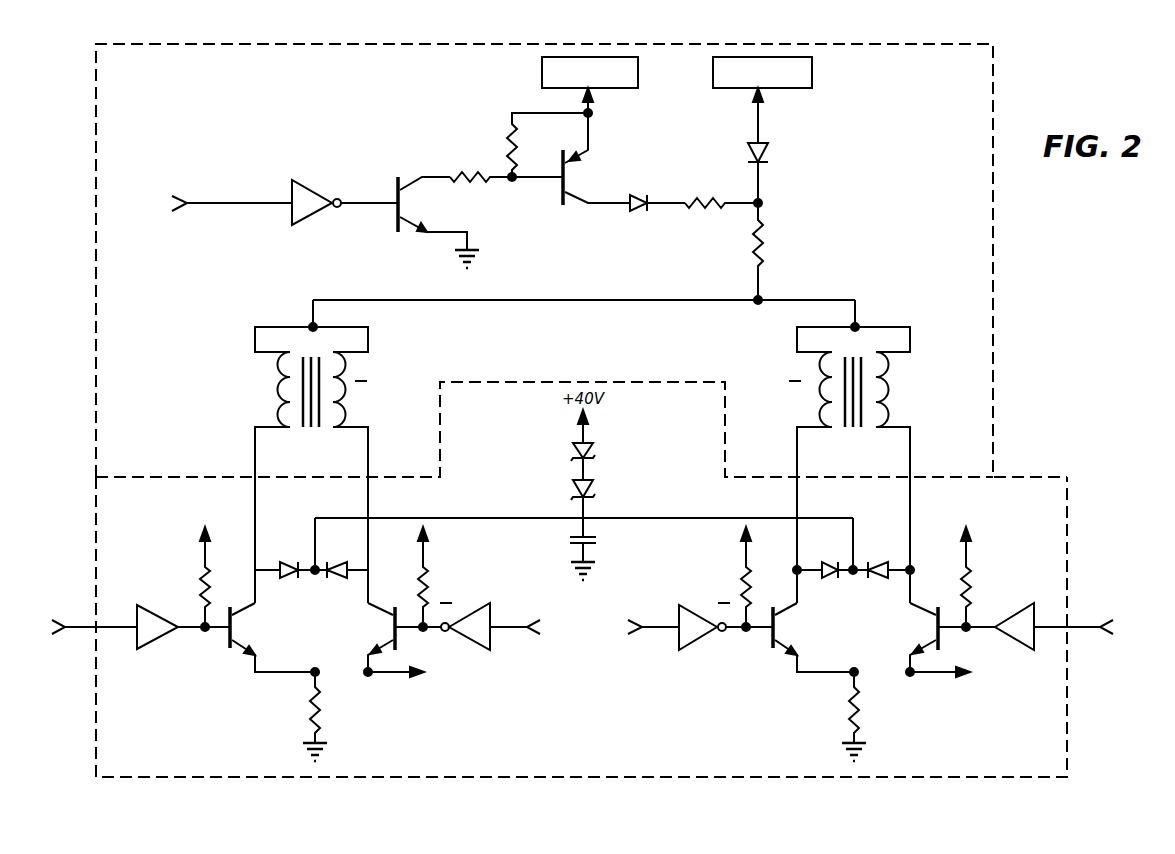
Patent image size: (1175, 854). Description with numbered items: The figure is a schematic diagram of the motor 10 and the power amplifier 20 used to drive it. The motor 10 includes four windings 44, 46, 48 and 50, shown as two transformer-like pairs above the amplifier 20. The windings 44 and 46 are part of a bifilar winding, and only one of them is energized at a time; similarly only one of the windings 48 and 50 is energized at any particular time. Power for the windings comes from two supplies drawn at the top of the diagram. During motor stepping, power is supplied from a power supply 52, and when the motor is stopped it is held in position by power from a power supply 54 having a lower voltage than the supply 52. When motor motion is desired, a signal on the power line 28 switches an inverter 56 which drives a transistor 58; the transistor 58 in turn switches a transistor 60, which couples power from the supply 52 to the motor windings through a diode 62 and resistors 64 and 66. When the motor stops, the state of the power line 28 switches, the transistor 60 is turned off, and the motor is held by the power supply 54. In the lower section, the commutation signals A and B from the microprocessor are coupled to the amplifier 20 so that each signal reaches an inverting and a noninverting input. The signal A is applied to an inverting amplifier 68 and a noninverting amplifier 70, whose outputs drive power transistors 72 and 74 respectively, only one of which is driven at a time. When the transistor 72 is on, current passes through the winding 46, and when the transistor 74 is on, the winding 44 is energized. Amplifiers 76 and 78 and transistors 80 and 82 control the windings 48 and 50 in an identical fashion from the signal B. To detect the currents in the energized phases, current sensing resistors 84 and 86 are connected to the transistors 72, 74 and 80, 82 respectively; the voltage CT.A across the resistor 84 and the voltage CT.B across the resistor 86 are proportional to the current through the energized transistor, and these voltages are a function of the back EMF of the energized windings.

The motor 10 is at (95, 397).
The amplifier 20 is at (96, 531).
The power line 28 is at (238, 205).
The winding 44 is at (280, 408).
The winding 46 is at (348, 410).
The winding 48 is at (822, 408).
The winding 50 is at (891, 410).
The power supply 52 is at (542, 70).
The power supply 54 is at (812, 68).
The inverter 56 is at (308, 225).
The transistor 58 is at (394, 216).
The transistor 60 is at (560, 188).
The diode 62 is at (640, 210).
The resistor 64 is at (720, 200).
The resistor 66 is at (770, 250).
The inverting amplifier 68 is at (476, 650).
The noninverting amplifier 70 is at (155, 606).
The power transistor 72 is at (398, 634).
The power transistor 74 is at (229, 640).
The amplifier 76 is at (700, 652).
The amplifier 78 is at (1004, 617).
The transistor 80 is at (772, 640).
The transistor 82 is at (940, 634).
The current sensing resistor 84 is at (322, 714).
The current sensing resistor 86 is at (868, 714).